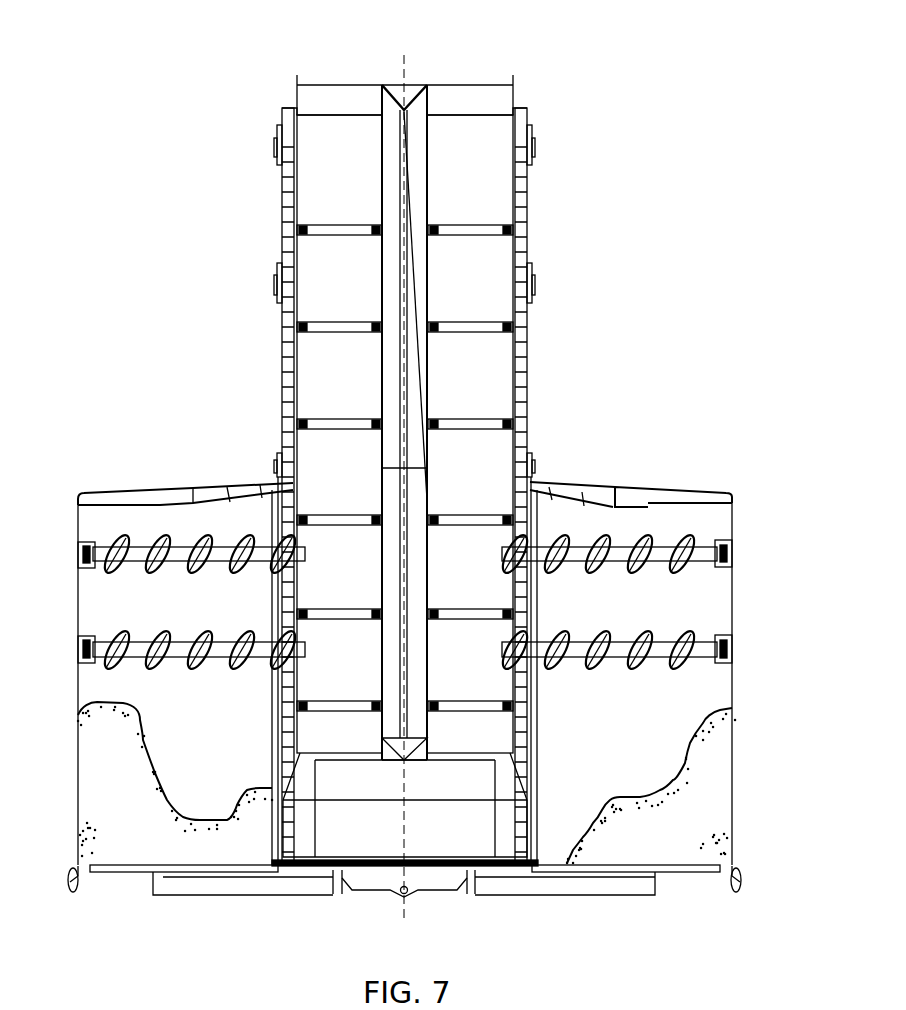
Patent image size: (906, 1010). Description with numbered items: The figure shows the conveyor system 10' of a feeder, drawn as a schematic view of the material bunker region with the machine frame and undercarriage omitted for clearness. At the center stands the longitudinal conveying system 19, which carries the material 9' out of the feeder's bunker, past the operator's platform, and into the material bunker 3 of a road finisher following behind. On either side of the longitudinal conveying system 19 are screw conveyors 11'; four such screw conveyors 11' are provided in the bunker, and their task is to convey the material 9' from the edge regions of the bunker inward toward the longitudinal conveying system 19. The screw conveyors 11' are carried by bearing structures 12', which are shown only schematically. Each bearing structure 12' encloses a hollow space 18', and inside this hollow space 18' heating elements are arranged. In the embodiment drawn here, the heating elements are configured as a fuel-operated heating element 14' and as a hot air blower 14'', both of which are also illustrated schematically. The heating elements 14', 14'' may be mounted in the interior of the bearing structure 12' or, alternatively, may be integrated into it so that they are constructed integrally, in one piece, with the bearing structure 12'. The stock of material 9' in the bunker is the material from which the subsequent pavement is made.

The longitudinal conveying system 19 is at (350, 140).
The conveyor system 10' is at (404, 486).
The material 9' is at (405, 673).
The bearing structure 12' is at (409, 603).
The fuel-operated heating element 14' is at (409, 640).
The hot air blower 14'' is at (412, 543).
The hollow space 18' is at (409, 614).
The screw conveyor 11' is at (409, 602).
The material bunker 3 is at (743, 652).